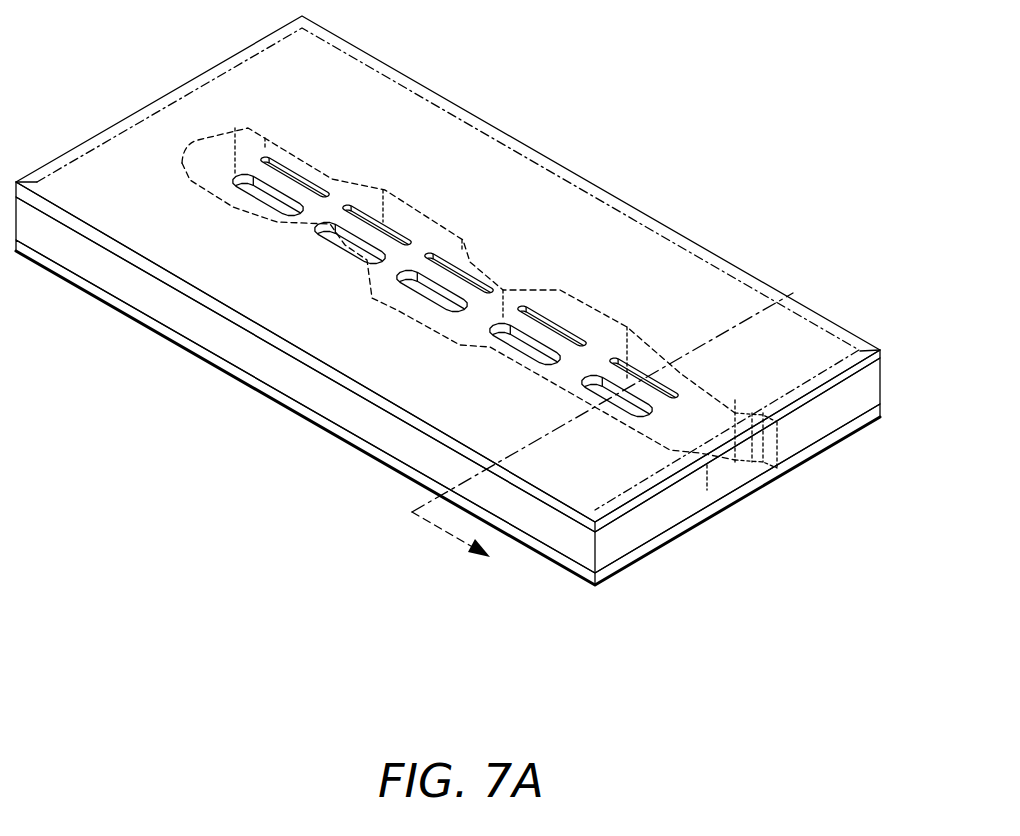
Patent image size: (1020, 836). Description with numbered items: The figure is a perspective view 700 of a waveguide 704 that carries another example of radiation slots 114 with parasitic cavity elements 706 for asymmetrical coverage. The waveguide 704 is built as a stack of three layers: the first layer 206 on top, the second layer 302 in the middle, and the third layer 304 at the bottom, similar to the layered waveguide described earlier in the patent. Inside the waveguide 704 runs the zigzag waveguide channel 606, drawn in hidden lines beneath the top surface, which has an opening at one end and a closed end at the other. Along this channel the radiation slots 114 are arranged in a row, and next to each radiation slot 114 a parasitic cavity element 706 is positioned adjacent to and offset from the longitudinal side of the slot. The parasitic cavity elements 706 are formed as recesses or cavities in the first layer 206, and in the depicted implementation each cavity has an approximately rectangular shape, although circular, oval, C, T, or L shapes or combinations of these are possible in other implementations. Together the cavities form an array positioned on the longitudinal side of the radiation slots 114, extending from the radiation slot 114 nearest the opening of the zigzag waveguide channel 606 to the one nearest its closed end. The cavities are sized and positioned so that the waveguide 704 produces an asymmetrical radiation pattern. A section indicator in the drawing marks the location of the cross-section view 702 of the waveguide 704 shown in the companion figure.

The perspective view 700 is at (128, 32).
The waveguide 704 is at (652, 218).
The first layer 206 is at (222, 330).
The second layer 302 is at (285, 367).
The third layer 304 is at (355, 440).
The parasitic cavity element 706 is at (292, 197).
The radiation slot 114 is at (442, 258).
The zigzag waveguide channel 606 is at (727, 477).
The cross-section view 702 is at (412, 512).